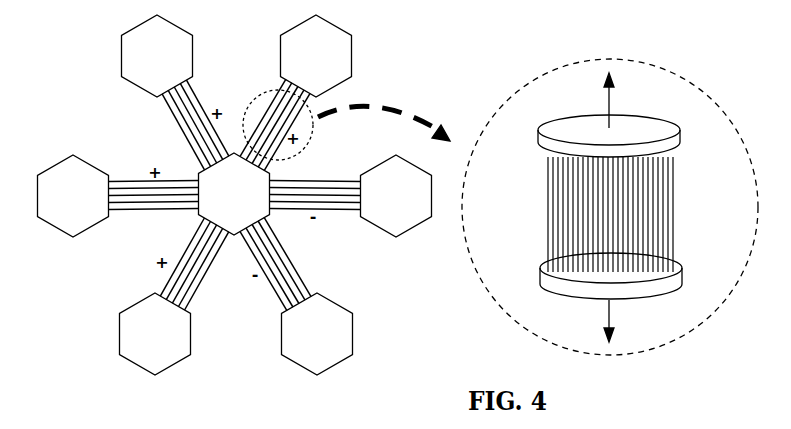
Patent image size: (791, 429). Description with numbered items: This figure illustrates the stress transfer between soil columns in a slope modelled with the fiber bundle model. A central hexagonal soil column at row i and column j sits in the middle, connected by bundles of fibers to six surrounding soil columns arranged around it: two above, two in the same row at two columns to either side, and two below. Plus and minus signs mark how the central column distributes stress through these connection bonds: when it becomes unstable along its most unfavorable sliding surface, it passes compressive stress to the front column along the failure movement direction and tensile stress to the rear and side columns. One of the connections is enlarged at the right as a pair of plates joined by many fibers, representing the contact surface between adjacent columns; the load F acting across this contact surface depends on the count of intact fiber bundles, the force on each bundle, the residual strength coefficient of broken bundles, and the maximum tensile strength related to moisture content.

The load between contact surfaces F is at (622, 207).